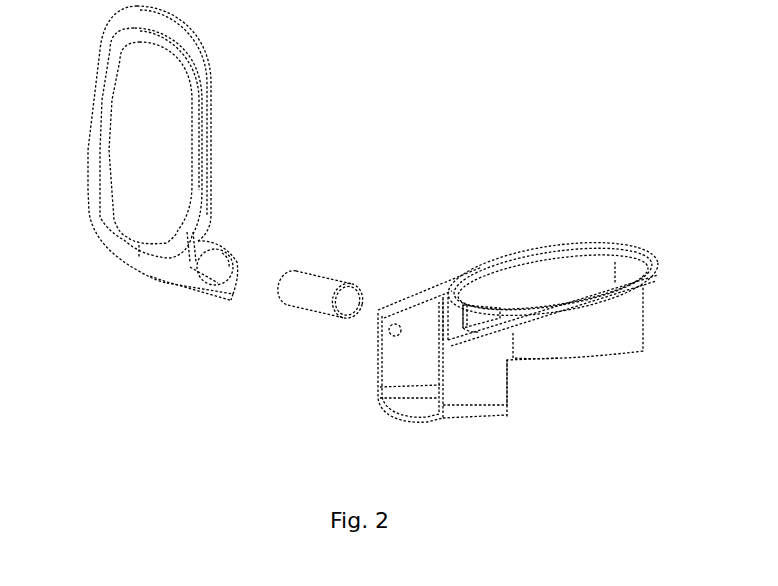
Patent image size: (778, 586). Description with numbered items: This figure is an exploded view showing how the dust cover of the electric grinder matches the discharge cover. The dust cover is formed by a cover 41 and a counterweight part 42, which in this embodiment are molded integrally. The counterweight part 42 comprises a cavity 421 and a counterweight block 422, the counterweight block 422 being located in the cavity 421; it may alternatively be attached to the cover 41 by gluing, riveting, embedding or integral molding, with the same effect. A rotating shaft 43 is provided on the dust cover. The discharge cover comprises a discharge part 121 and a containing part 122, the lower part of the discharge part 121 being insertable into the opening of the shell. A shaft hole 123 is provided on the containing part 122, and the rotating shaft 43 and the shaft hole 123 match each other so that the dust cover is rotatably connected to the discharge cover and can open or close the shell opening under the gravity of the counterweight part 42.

The cover 41 is at (122, 140).
The counterweight part 42 is at (212, 296).
The cavity 421 is at (220, 263).
The counterweight block 422 is at (323, 287).
The rotating shaft 43 is at (187, 278).
The discharge part 121 is at (593, 270).
The containing part 122 is at (417, 420).
The shaft hole 123 is at (390, 337).